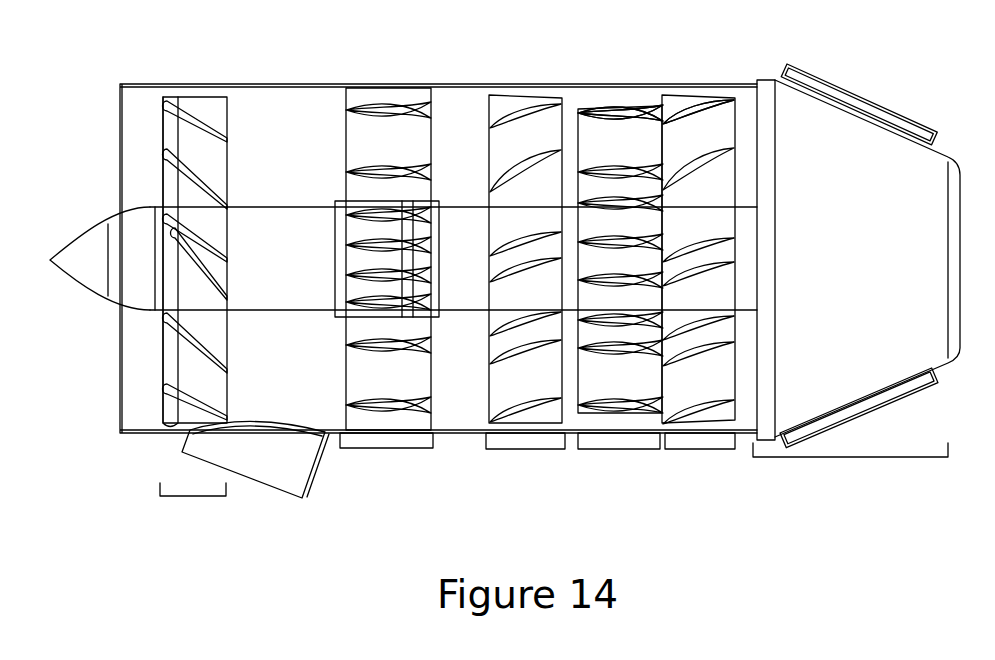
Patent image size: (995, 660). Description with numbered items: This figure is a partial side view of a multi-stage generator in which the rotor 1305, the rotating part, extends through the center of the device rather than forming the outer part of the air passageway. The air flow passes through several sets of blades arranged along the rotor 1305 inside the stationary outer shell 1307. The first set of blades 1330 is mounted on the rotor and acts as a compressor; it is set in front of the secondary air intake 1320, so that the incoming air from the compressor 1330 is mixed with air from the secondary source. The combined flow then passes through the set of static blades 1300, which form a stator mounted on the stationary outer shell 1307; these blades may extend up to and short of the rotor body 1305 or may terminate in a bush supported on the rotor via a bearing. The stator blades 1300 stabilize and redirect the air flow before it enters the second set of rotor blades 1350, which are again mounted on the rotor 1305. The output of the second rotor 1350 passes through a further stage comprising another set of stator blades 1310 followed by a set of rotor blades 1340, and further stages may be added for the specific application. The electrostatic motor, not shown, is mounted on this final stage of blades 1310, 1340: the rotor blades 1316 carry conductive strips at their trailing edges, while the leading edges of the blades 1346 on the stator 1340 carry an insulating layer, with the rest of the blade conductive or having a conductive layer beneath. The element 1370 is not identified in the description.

The rotor 1305 is at (82, 252).
The stationary outer shell 1307 is at (298, 84).
The first set of blades 1330 is at (186, 497).
The secondary air intake 1320 is at (313, 478).
The set of static blades 1300 is at (400, 449).
The second set of rotor blades 1350 is at (533, 451).
The set of stator blades 1310 is at (607, 286).
The rotor blades 1316 is at (600, 108).
The set of rotor blades 1340 is at (702, 276).
The blades 1346 is at (673, 106).
The exhaust nozzle 1370 is at (802, 457).